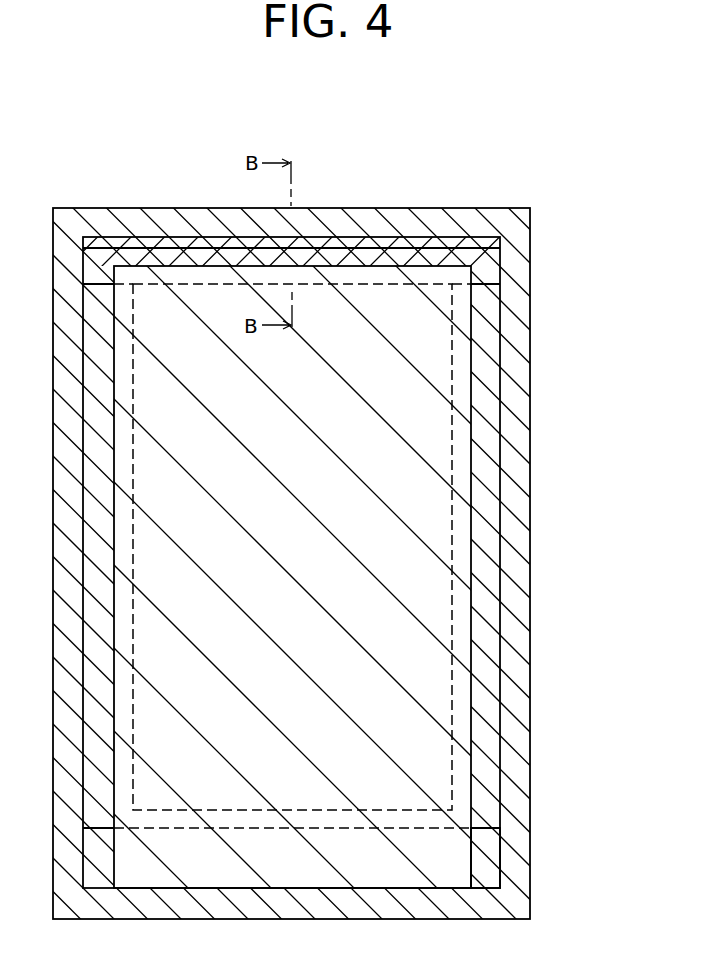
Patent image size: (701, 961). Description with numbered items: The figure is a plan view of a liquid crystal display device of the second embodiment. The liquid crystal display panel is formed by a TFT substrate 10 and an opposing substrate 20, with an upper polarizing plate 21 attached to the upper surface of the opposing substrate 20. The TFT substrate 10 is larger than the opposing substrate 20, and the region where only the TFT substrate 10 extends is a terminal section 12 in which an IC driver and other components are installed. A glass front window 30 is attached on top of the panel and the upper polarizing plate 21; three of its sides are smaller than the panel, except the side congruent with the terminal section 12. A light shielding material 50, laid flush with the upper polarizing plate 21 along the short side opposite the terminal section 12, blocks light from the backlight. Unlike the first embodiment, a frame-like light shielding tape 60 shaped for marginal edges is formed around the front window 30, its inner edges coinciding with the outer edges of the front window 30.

The TFT substrate 10 is at (500, 846).
The terminal section 12 is at (487, 872).
The opposing substrate 20 is at (500, 750).
The upper polarizing plate 21 is at (452, 437).
The front window 30 is at (471, 556).
The light shielding material 50 is at (478, 262).
The light shielding tape 60 is at (530, 338).